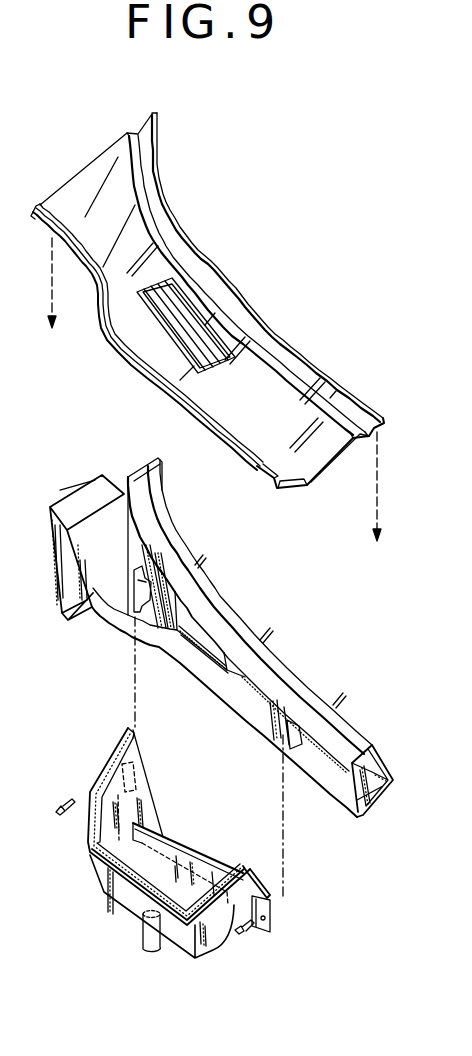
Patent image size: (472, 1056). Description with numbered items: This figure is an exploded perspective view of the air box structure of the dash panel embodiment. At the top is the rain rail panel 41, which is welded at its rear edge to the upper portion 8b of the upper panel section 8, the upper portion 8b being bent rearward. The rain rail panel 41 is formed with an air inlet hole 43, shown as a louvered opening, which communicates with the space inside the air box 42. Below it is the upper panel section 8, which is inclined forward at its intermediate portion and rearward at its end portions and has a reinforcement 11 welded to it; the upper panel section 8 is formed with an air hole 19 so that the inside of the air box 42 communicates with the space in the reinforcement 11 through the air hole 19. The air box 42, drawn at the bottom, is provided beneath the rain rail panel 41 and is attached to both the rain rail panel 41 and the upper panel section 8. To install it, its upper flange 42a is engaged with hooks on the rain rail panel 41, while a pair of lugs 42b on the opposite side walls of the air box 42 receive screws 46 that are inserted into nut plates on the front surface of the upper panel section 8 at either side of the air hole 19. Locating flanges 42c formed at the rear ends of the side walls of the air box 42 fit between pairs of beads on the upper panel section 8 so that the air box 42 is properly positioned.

The upper panel section 8 is at (347, 787).
The upper portion 8b is at (287, 690).
The reinforcement 11 is at (368, 768).
The air hole 19 is at (198, 634).
The rain rail panel 41 is at (283, 351).
The air box 42 is at (180, 937).
The upper flange 42a is at (98, 857).
The lug 42b is at (123, 766).
The locating flange 42c is at (272, 902).
The air inlet hole 43 is at (192, 323).
The screw 46 is at (59, 804).